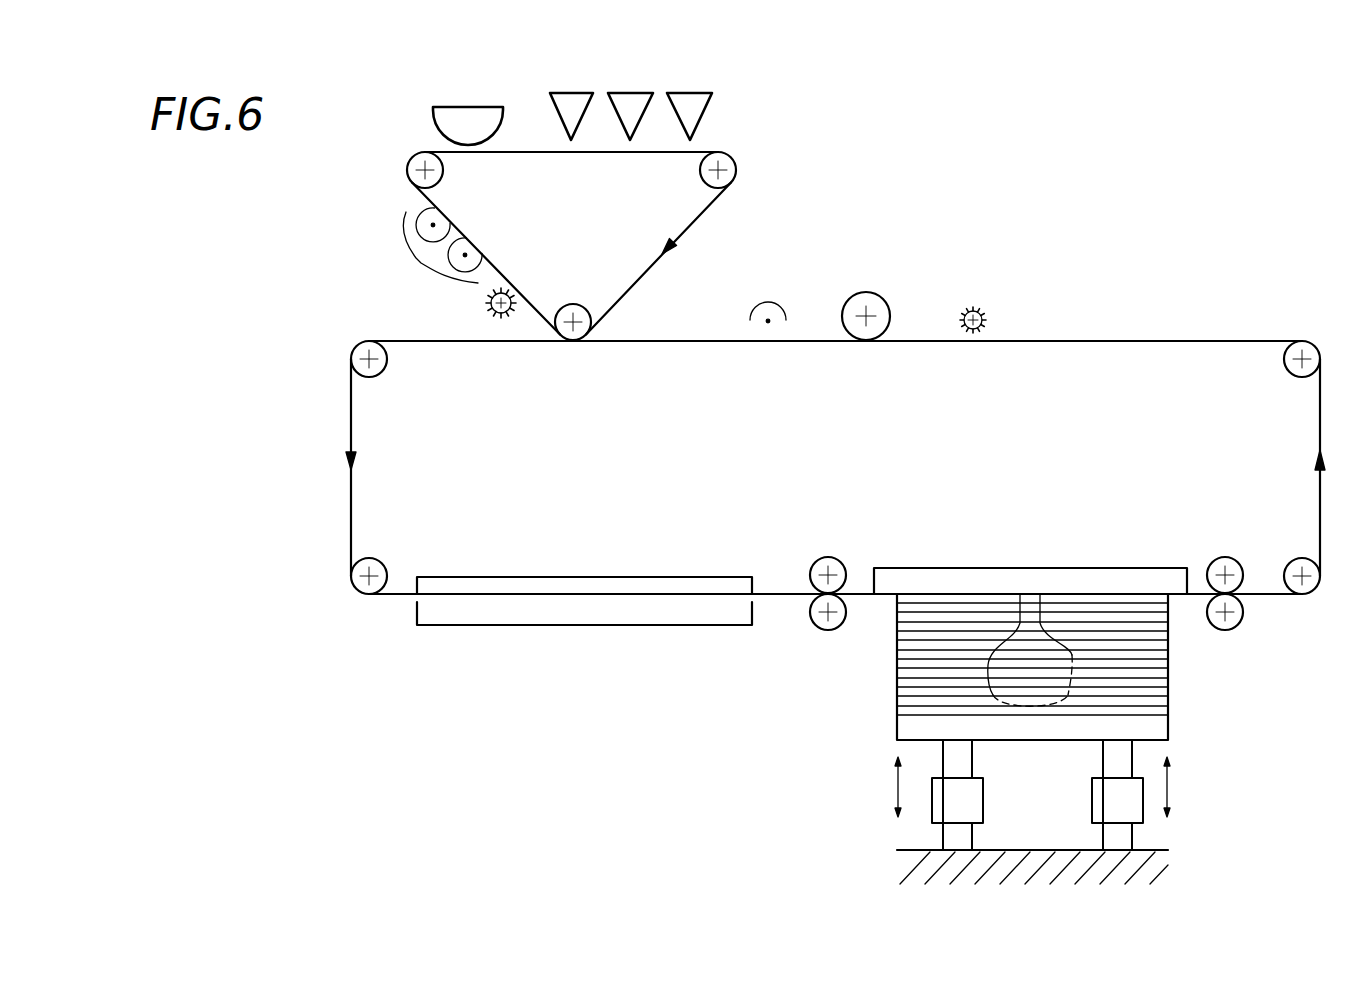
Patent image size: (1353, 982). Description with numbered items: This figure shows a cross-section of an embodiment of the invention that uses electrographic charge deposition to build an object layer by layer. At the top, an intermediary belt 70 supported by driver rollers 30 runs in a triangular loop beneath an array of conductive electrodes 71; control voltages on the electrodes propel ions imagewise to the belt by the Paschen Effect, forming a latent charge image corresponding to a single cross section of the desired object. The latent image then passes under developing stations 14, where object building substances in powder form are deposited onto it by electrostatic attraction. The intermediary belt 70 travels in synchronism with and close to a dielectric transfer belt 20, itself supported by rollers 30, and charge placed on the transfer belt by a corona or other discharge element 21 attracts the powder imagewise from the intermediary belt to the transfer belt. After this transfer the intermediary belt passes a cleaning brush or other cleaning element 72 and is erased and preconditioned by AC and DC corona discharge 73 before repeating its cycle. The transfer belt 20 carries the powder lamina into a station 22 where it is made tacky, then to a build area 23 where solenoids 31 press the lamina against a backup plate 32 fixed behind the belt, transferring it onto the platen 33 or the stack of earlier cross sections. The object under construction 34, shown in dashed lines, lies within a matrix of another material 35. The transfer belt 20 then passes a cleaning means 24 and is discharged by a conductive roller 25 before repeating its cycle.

The developing stations 14 is at (542, 87).
The transfer belt 20 is at (1176, 338).
The discharge element 21 is at (775, 308).
The station 22 is at (585, 575).
The build area 23 is at (960, 508).
The cleaning means 24 is at (982, 310).
The conductive roller 25 is at (880, 295).
The rollers 30 is at (443, 178).
The solenoids 31 is at (973, 815).
The backup plate 32 is at (1108, 565).
The platen 33 is at (896, 731).
The object under construction 34 is at (1060, 650).
The matrix of another material 35 is at (930, 650).
The intermediary belt 70 is at (720, 200).
The conductive electrodes 71 is at (468, 107).
The cleaning element 72 is at (488, 309).
The corona discharge 73 is at (434, 249).